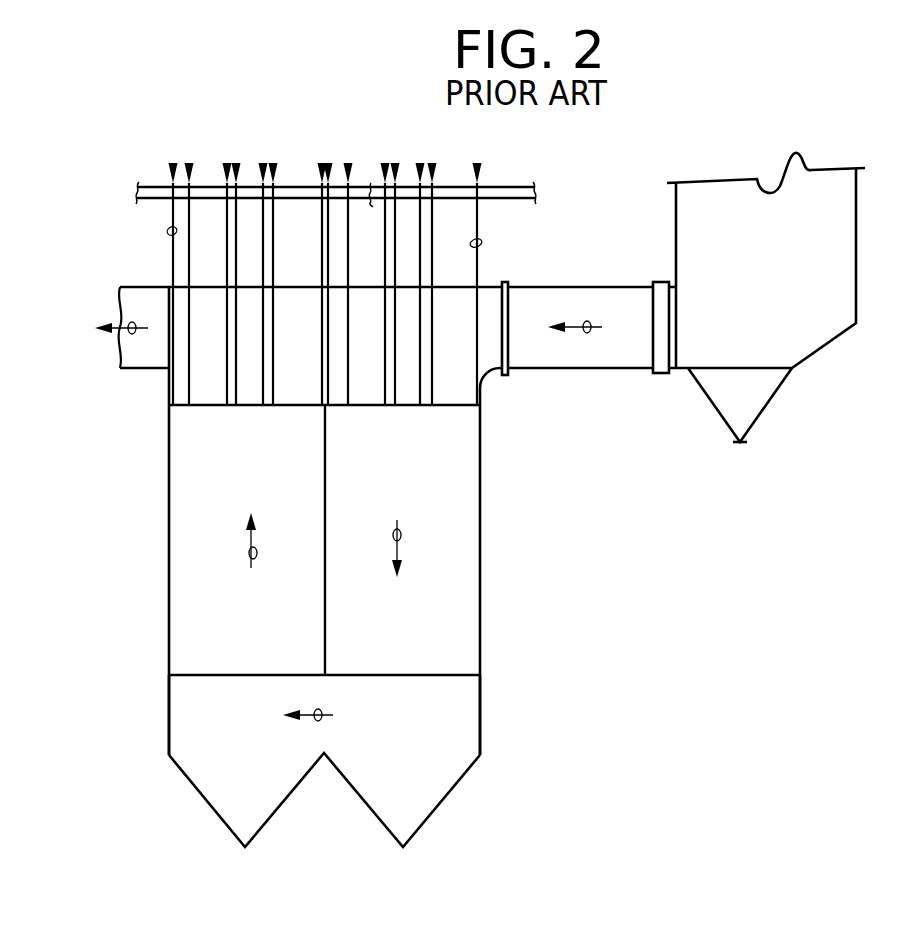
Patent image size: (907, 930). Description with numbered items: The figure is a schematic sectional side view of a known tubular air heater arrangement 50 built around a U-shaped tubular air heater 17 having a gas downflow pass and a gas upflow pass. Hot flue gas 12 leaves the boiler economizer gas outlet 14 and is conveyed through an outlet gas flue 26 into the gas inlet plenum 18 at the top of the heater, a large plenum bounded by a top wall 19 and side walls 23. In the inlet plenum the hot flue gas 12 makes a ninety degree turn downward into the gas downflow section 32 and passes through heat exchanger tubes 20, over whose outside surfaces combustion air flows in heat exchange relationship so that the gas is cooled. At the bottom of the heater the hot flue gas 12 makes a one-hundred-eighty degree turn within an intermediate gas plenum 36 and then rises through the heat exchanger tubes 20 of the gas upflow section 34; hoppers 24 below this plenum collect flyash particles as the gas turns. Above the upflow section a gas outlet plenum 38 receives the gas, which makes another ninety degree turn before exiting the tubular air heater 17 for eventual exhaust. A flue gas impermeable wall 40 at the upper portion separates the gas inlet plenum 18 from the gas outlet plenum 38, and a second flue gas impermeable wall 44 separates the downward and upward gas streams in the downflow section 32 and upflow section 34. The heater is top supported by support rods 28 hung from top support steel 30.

The hot flue gas 12 is at (127, 323).
The boiler economizer gas outlet 14 is at (780, 285).
The U-shaped tubular air heater 17 is at (137, 560).
The gas inlet plenum 18 is at (450, 295).
The top wall 19 is at (290, 292).
The heat exchanger tubes 20 is at (468, 590).
The side walls 23 is at (223, 358).
The hopper 24 is at (202, 773).
The outlet gas flue 26 is at (555, 300).
The support rods 28 is at (168, 231).
The top support steel 30 is at (502, 190).
The gas downflow section 32 is at (467, 461).
The gas upflow section 34 is at (175, 462).
The intermediate gas plenum 36 is at (472, 720).
The gas outlet plenum 38 is at (204, 294).
The flue gas impermeable wall 40 is at (322, 328).
The flue gas impermeable wall 44 is at (325, 487).
The tubular air heater arrangement 50 is at (606, 493).